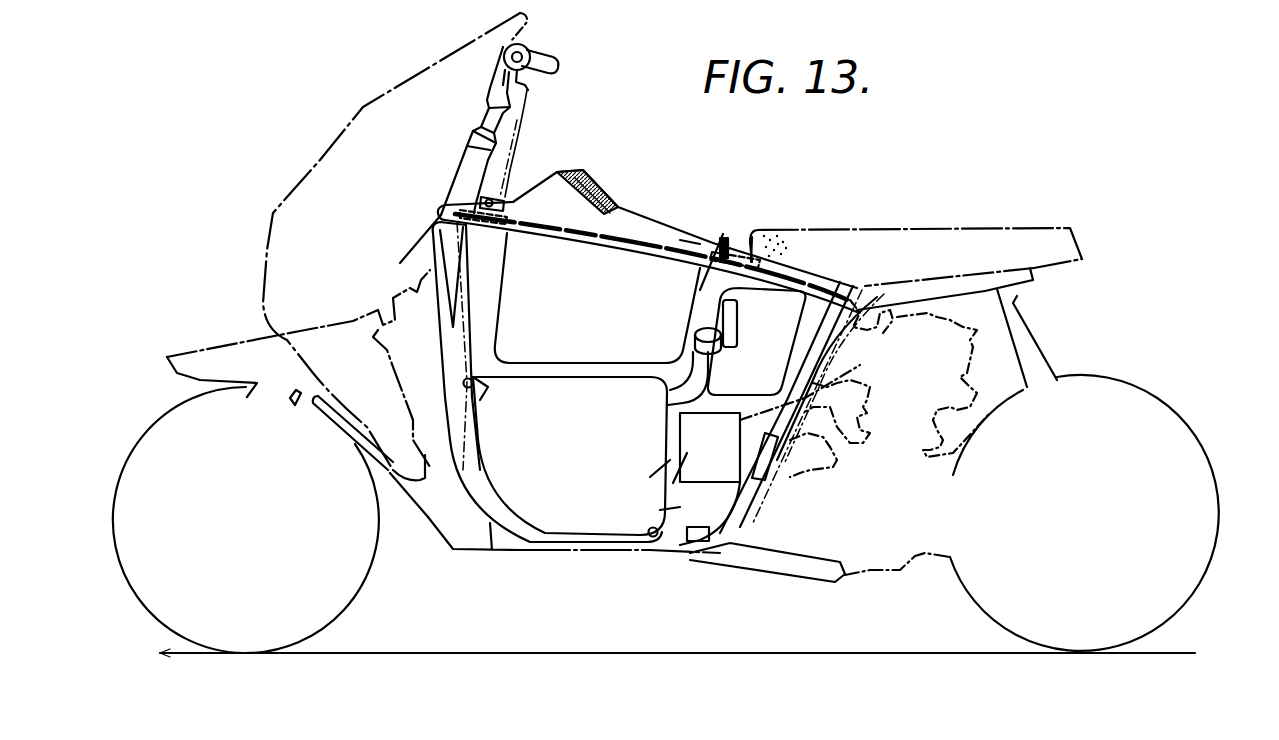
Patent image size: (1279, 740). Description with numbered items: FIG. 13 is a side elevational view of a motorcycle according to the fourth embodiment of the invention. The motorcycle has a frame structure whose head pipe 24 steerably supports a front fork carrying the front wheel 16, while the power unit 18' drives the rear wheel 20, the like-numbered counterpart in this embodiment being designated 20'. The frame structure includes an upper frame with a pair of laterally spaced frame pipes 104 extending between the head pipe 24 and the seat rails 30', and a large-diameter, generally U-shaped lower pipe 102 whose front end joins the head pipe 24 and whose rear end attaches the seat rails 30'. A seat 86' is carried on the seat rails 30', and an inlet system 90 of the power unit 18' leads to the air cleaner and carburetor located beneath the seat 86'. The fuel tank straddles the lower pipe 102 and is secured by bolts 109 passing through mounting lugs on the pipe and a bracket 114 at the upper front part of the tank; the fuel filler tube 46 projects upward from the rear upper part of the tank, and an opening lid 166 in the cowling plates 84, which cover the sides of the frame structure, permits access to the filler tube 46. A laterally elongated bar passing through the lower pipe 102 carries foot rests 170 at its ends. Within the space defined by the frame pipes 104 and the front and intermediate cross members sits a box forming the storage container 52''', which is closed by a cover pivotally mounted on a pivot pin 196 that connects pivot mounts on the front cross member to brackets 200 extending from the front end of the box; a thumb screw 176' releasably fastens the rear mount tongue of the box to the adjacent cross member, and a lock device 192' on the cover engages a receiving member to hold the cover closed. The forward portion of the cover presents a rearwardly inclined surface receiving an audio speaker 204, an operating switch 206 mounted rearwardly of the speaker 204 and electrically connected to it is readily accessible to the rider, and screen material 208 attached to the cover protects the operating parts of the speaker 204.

The cowling plate 84 is at (483, 31).
The head pipe 24 is at (461, 161).
The pivot pin 196 is at (457, 183).
The bracket 200 is at (500, 195).
The audio speaker 204 is at (566, 172).
The screen material 208 is at (600, 200).
The operating switch 206 is at (660, 229).
The lock device 192' is at (724, 233).
The thumb screw 176' is at (758, 210).
The seat 86' is at (916, 239).
The inlet system 90 is at (807, 315).
The frame pipe 104 is at (587, 245).
The storage container 52''' is at (609, 298).
The opening lid 166 is at (764, 344).
The fuel filler tube 46 is at (712, 370).
The bolt 109 is at (463, 384).
The bracket 114 is at (482, 390).
The lower pipe 102 is at (473, 495).
The front wheel 16 is at (371, 575).
The foot rest 170 is at (697, 542).
The power unit 18' is at (795, 586).
The seat rail 30' is at (883, 434).
The rear wheel 20' is at (1037, 327).
The rear wheel 20 is at (1114, 513).